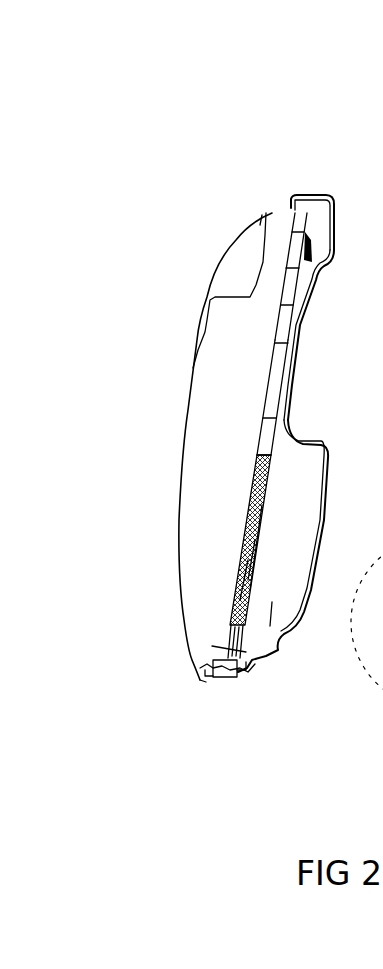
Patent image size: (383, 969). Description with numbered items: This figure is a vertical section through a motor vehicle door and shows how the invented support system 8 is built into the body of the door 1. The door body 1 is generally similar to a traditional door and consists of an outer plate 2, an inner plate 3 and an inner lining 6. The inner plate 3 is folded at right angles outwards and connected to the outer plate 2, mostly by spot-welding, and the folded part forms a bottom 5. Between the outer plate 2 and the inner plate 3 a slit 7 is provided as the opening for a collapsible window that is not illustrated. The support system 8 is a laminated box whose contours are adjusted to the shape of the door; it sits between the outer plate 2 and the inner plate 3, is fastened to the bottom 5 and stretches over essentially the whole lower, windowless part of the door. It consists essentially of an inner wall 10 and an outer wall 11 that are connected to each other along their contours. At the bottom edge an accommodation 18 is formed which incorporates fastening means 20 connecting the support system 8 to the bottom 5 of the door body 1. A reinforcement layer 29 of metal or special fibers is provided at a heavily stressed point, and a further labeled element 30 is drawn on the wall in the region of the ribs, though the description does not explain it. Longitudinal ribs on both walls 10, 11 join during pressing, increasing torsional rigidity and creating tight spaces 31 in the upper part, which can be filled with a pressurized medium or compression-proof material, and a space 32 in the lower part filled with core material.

The body of the door 1 is at (213, 183).
The outer plate 2 is at (223, 260).
The inner plate 3 is at (260, 657).
The bottom 5 is at (237, 672).
The inner lining 6 is at (250, 297).
The slit 7 is at (281, 205).
The support system 8 is at (220, 558).
The inner wall 10 is at (265, 498).
The outer wall 11 is at (253, 467).
The accommodation 18 is at (230, 625).
The fastening means 20 is at (225, 660).
The reinforcement layer 29 is at (300, 320).
The rail segment 30 is at (277, 381).
The tight spaces 31 is at (282, 353).
The space 32 is at (245, 565).